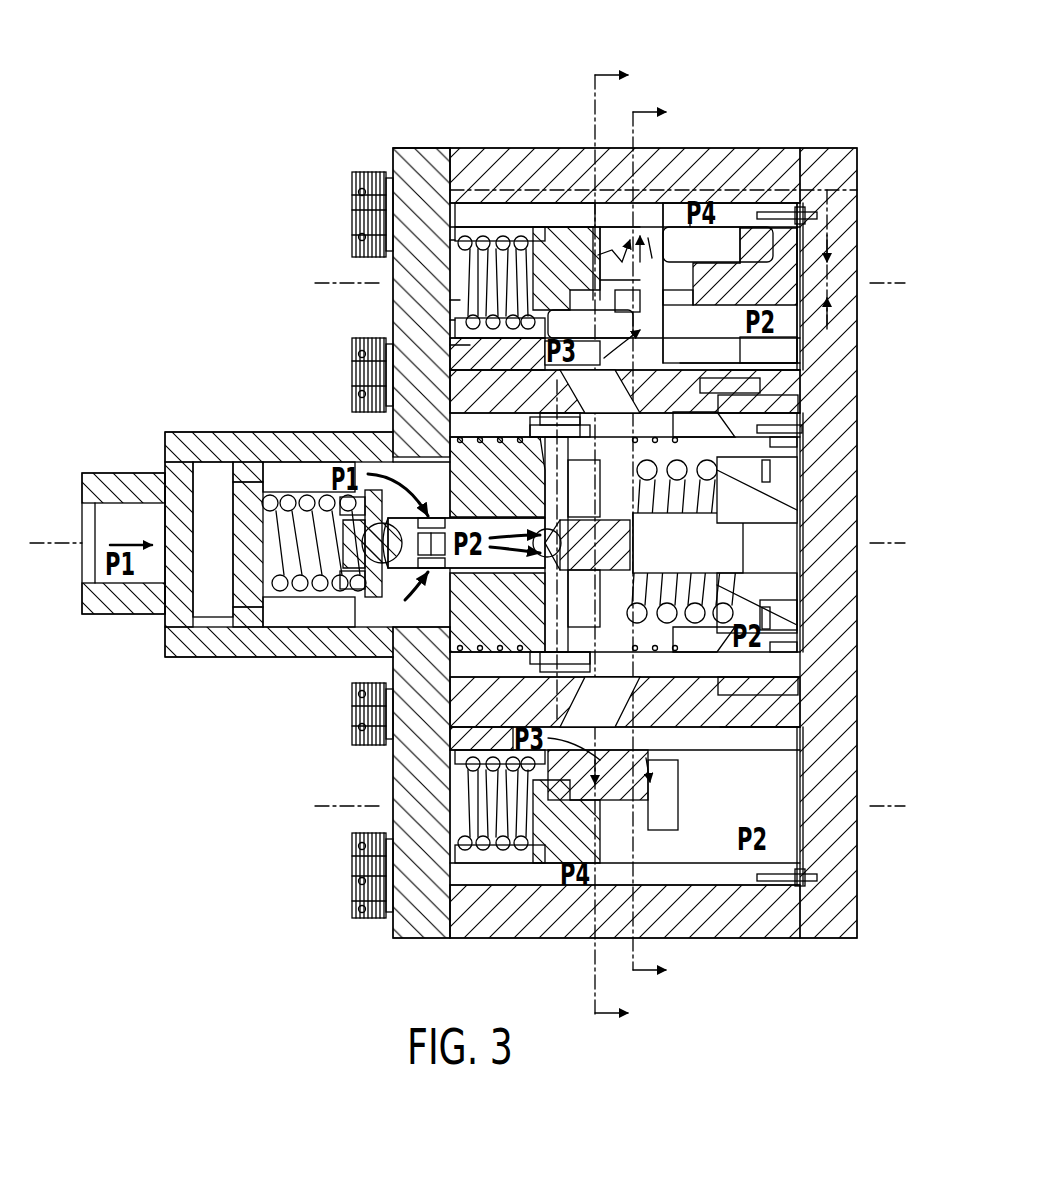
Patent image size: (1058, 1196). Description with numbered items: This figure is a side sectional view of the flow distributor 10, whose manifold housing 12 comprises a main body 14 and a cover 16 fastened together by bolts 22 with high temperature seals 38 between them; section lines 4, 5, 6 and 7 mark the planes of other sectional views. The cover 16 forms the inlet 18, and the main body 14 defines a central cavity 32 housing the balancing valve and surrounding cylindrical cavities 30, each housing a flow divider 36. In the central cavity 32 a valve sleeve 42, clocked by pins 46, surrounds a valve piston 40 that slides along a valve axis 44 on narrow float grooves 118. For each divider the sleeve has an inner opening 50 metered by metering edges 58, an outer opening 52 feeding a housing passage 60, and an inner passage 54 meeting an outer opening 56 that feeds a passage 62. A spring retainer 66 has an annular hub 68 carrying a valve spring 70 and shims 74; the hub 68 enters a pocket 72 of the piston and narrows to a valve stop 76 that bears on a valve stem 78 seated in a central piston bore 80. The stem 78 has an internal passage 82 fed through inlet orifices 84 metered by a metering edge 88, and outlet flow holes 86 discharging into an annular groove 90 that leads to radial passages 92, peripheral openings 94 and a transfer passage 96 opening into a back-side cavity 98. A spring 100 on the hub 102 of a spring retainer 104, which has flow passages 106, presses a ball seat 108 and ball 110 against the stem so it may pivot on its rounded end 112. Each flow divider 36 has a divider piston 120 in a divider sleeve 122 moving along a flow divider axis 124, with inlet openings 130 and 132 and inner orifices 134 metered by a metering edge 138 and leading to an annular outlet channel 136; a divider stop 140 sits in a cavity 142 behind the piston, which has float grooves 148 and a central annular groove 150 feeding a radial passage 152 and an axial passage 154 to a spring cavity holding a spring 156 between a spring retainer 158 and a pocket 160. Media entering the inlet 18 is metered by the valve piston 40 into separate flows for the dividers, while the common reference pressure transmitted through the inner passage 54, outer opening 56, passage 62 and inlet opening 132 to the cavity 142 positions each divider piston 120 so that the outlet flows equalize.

The flow distributor 10 is at (345, 92).
The manifold housing 12 is at (822, 148).
The main body 14 is at (497, 160).
The cover 16 is at (418, 190).
The inlet 18 is at (84, 575).
The bolts 22 is at (355, 222).
The cylindrical cavities 30 is at (793, 150).
The central cavity 32 is at (760, 700).
The flow divider 36 is at (478, 228).
The high temperature seals 38 is at (455, 725).
The valve piston 40 is at (466, 579).
The valve sleeve 42 is at (355, 432).
The valve axis 44 is at (98, 515).
The pins 46 is at (815, 215).
The inner opening 50 is at (700, 420).
The outer opening 52 is at (550, 430).
The inner passage 54 is at (790, 442).
The outer opening 56 is at (735, 400).
The metering edges 58 is at (580, 405).
The passage 60 is at (745, 385).
The passage 62 is at (740, 384).
The spring retainer 66 is at (778, 510).
The annular hub 68 is at (785, 610).
The valve spring 70 is at (718, 515).
The pocket 72 is at (672, 690).
The shims 74 is at (770, 625).
The valve stop 76 is at (688, 543).
The valve stem 78 is at (462, 500).
The piston bore 80 is at (390, 650).
The internal passage 82 is at (478, 570).
The inlet orifices 84 is at (440, 520).
The outlet flow holes 86 is at (562, 545).
The metering edge 88 is at (434, 575).
The annular groove 90 is at (525, 505).
The radial passages 92 is at (560, 475).
The peripheral openings 94 is at (572, 435).
The transfer passage 96 is at (588, 515).
The cavity 98 is at (745, 532).
The spring 100 is at (300, 590).
The hub 102 is at (238, 545).
The spring retainer 104 is at (228, 620).
The flow passages 106 is at (243, 480).
The ball seat 108 is at (312, 510).
The ball 110 is at (262, 500).
The rounded end 112 is at (661, 543).
The float grooves 118 is at (470, 345).
The divider piston 120 is at (610, 275).
The divider sleeve 122 is at (762, 205).
The flow divider axis 124 is at (320, 290).
The inlet opening 130 is at (740, 295).
The inlet opening 132 is at (790, 375).
The inner orifices 134 is at (627, 203).
The annular outlet channel 136 is at (690, 312).
The metering edge 138 is at (655, 282).
The divider stop 140 is at (755, 283).
The cavity 142 is at (730, 283).
The float grooves 148 is at (560, 228).
The central annular groove 150 is at (590, 324).
The radial passage 152 is at (612, 232).
The axial passage 154 is at (598, 285).
The spring 156 is at (455, 315).
The spring retainer 158 is at (455, 280).
The pocket 160 is at (478, 218).
The section line 4 is at (722, 545).
The section line 5 is at (630, 247).
The section line 6 is at (630, 771).
The section line 7 is at (660, 542).